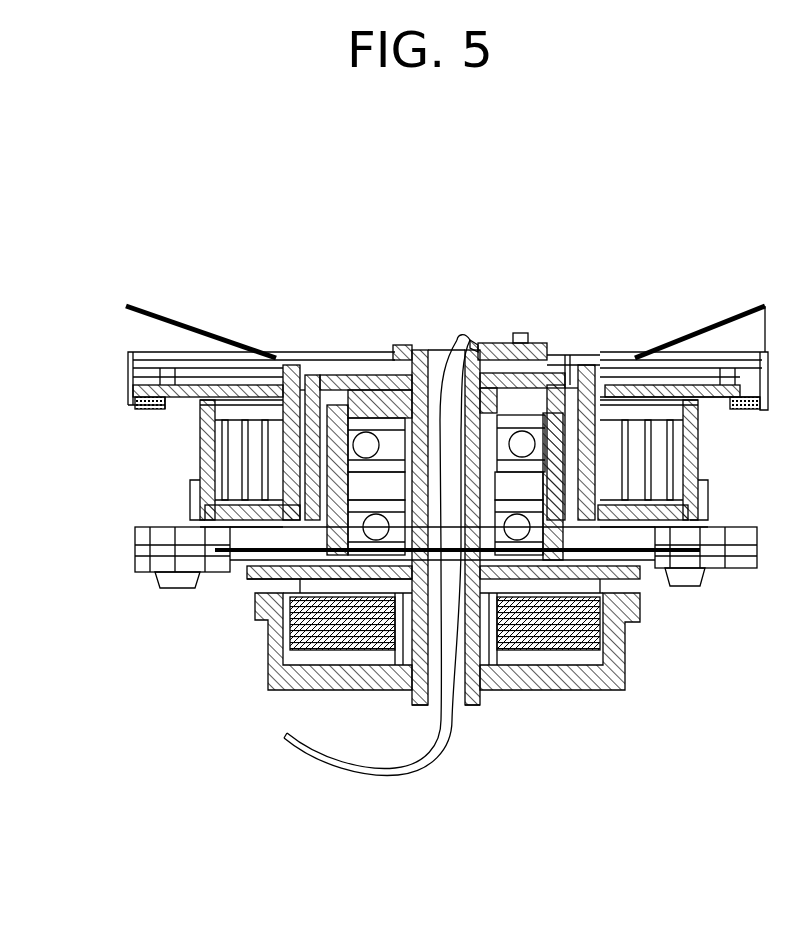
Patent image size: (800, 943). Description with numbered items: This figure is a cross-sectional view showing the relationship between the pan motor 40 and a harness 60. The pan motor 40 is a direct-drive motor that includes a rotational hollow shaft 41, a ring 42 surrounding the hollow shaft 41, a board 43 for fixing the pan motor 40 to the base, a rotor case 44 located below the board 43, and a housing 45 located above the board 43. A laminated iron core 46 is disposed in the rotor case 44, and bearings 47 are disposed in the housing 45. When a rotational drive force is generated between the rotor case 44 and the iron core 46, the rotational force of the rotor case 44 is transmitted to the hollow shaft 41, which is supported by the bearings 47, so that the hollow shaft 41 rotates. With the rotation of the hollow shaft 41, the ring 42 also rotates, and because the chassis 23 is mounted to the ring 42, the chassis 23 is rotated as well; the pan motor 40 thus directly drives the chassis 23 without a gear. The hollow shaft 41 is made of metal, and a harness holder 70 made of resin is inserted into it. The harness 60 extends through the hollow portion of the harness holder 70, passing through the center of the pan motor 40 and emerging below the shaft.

The chassis 23 is at (183, 345).
The pan motor 40 is at (407, 525).
The rotational hollow shaft 41 is at (408, 357).
The ring 42 is at (550, 357).
The board 43 is at (150, 558).
The rotor case 44 is at (270, 643).
The housing 45 is at (340, 483).
The laminated iron core 46 is at (603, 632).
The bearings 47 is at (517, 527).
The harness 60 is at (353, 772).
The harness holder 70 is at (488, 347).